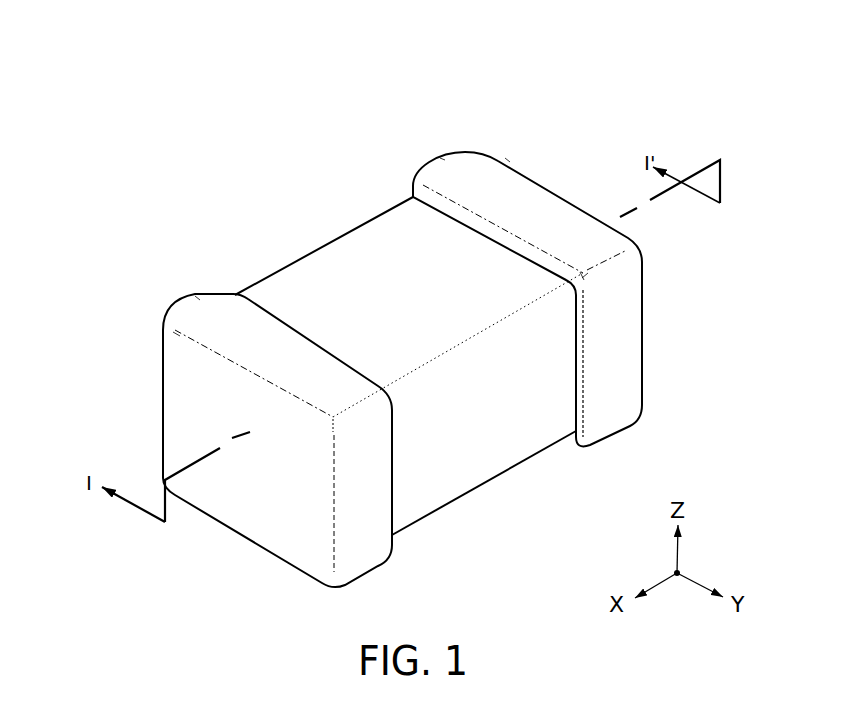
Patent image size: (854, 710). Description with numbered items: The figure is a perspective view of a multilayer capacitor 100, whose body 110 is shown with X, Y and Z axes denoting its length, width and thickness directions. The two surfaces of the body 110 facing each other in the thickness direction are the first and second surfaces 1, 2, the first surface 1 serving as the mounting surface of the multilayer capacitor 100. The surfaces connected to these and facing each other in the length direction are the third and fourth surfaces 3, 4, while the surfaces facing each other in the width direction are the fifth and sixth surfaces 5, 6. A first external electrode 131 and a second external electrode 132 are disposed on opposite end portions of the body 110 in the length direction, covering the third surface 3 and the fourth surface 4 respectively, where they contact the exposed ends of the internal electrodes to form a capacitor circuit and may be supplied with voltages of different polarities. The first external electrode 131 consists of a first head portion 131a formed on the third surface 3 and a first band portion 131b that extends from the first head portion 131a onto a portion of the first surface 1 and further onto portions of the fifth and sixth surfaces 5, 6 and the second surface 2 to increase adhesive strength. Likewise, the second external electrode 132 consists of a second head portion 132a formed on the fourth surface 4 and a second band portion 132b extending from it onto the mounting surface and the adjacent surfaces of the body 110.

The multilayer capacitor 100 is at (283, 63).
The body 110 is at (345, 252).
The first surface 1 is at (428, 463).
The second surface 2 is at (388, 243).
The third surface 3 is at (237, 502).
The fourth surface 4 is at (603, 340).
The fifth surface 5 is at (495, 446).
The sixth surface 6 is at (327, 295).
The first external electrode 131 is at (183, 226).
The first head portion 131a is at (180, 398).
The first band portion 131b is at (200, 318).
The second external electrode 132 is at (488, 46).
The second head portion 132a is at (512, 168).
The second band portion 132b is at (443, 163).